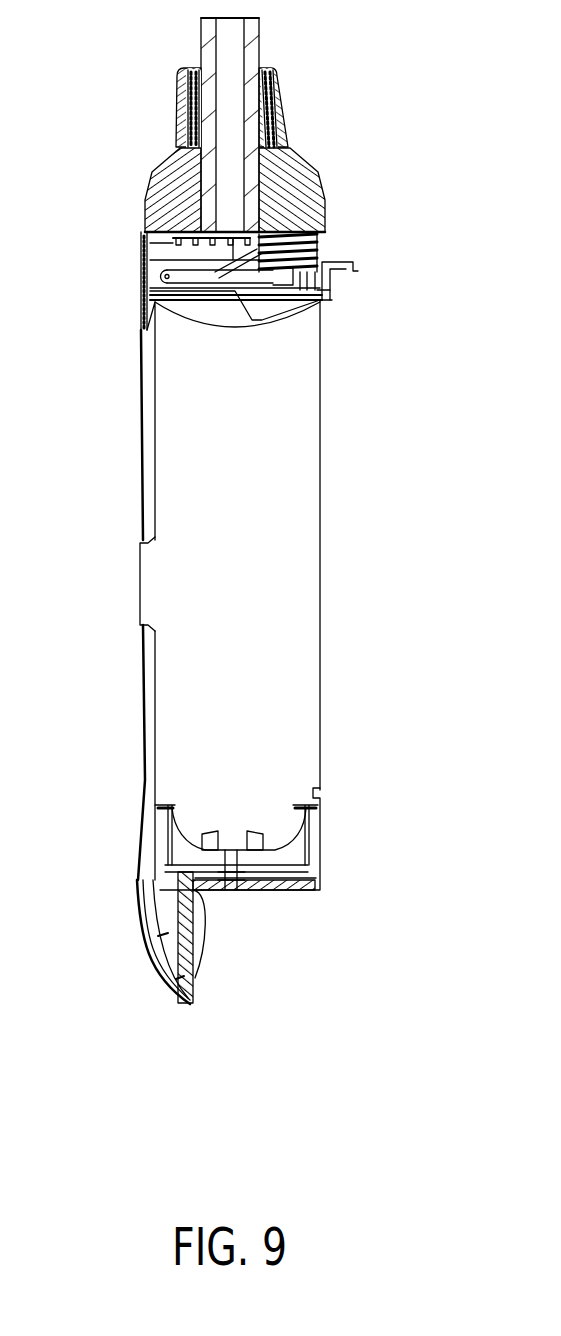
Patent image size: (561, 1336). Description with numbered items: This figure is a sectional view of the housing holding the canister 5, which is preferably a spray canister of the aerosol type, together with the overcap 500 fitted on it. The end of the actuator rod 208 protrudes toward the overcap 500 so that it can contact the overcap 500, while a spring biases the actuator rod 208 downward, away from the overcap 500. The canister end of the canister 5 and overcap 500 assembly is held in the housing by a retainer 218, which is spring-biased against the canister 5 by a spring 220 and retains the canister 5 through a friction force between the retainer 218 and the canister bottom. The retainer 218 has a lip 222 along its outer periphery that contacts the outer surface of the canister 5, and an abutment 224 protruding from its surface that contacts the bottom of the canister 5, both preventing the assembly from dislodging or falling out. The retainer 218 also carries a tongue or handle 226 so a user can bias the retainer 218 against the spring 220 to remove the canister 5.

The canister 5 is at (307, 633).
The spring 220 is at (322, 246).
The tongue or handle 226 is at (348, 263).
The retainer 218 is at (335, 283).
The lip 222 is at (323, 298).
The abutment 224 is at (293, 318).
The overcap 500 is at (315, 840).
The actuator rod 208 is at (150, 947).